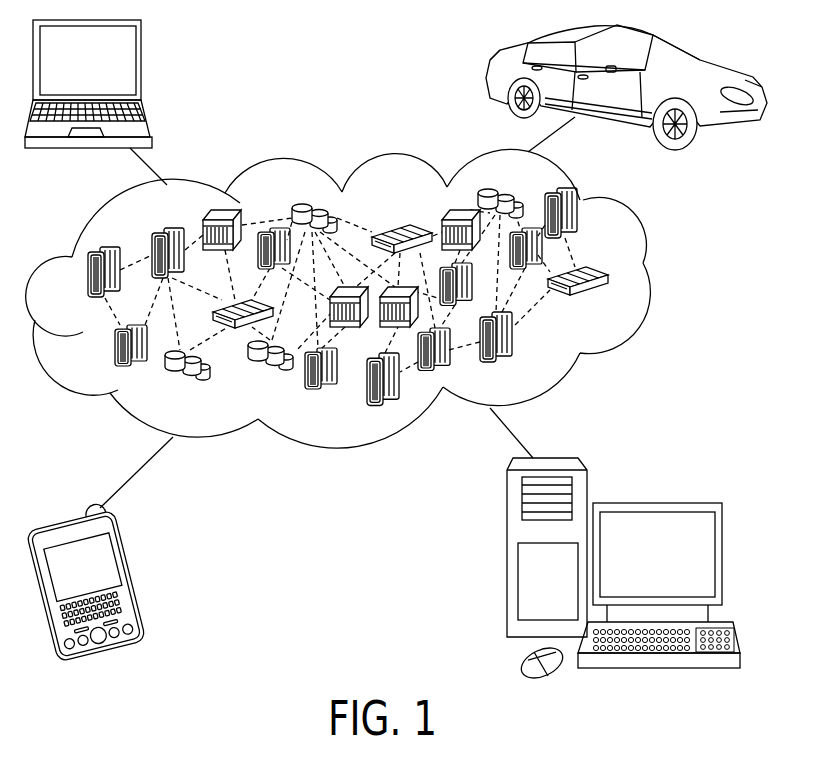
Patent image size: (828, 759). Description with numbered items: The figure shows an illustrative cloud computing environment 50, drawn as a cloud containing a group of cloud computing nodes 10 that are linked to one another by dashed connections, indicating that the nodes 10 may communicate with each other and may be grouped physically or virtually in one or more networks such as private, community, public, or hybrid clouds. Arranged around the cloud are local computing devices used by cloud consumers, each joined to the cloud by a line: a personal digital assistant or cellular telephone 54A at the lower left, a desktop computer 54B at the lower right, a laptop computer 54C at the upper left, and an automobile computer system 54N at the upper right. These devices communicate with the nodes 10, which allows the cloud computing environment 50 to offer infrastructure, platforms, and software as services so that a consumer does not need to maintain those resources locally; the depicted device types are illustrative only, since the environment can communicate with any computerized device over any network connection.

The cloud computing nodes 10 is at (630, 299).
The cloud computing environment 50 is at (657, 278).
The personal digital assistant or cellular telephone 54A is at (133, 575).
The desktop computer 54B is at (655, 503).
The laptop computer 54C is at (143, 68).
The automobile computer system 54N is at (485, 84).